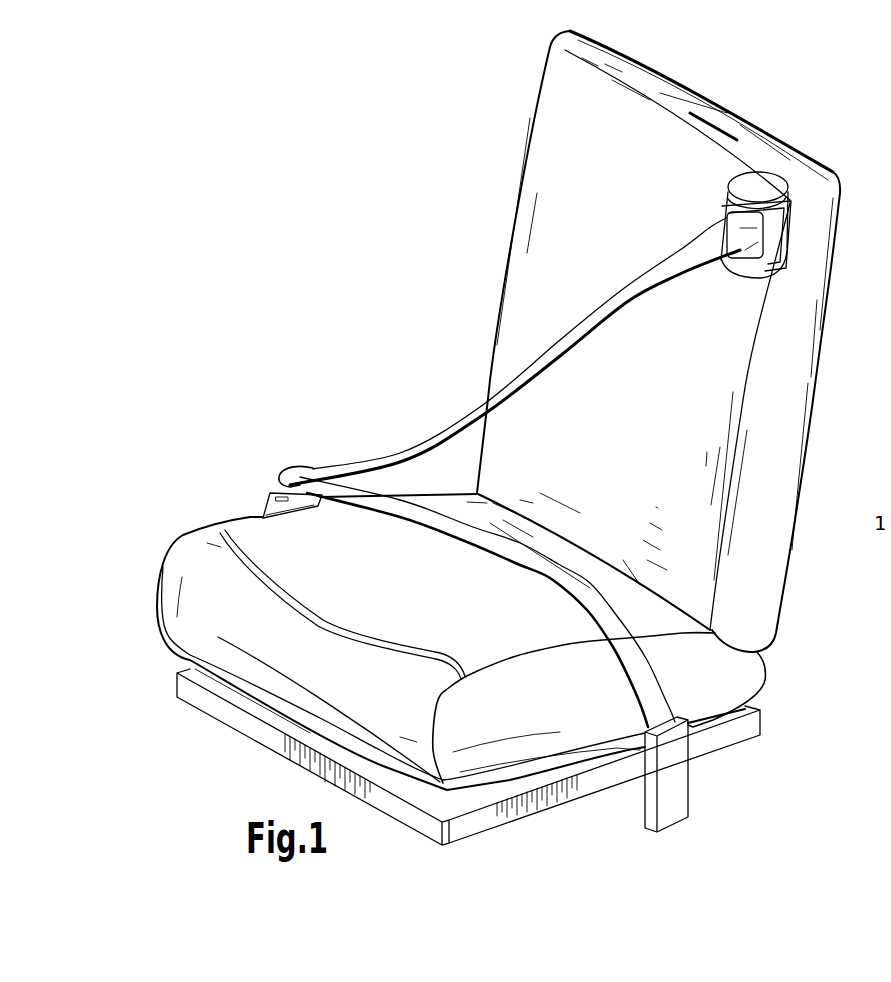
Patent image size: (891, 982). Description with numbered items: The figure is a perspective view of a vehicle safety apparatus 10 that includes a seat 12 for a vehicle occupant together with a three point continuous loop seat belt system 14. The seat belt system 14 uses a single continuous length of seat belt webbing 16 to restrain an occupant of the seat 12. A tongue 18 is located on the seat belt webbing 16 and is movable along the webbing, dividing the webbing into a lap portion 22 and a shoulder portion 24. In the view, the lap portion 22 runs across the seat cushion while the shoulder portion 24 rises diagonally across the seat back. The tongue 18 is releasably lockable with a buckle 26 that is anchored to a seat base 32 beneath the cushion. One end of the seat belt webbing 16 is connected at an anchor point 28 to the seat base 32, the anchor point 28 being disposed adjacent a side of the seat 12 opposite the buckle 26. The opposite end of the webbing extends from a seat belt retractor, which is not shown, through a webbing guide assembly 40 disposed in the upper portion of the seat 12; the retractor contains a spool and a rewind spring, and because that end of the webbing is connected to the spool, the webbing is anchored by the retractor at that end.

The vehicle safety apparatus 10 is at (398, 212).
The seat 12 is at (515, 140).
The seat belt system 14 is at (402, 412).
The seat belt webbing 16 is at (467, 398).
The tongue 18 is at (277, 481).
The lap portion 22 is at (443, 525).
The shoulder portion 24 is at (627, 299).
The buckle 26 is at (258, 500).
The anchor point 28 is at (675, 750).
The seat base 32 is at (437, 807).
The webbing guide assembly 40 is at (703, 210).